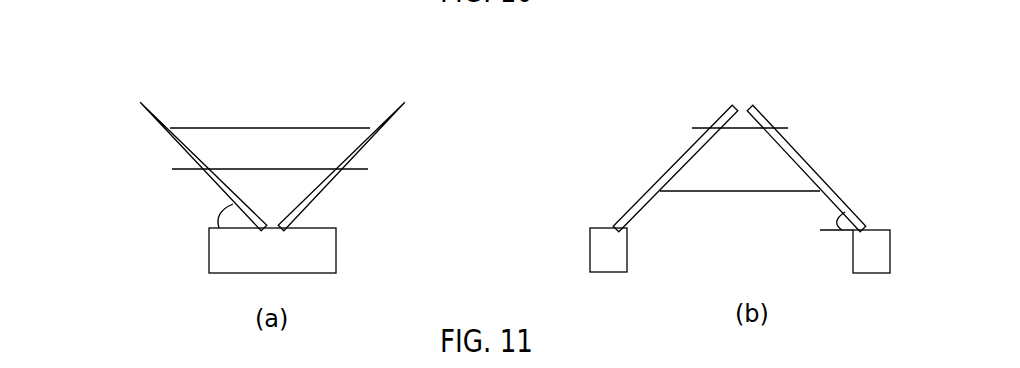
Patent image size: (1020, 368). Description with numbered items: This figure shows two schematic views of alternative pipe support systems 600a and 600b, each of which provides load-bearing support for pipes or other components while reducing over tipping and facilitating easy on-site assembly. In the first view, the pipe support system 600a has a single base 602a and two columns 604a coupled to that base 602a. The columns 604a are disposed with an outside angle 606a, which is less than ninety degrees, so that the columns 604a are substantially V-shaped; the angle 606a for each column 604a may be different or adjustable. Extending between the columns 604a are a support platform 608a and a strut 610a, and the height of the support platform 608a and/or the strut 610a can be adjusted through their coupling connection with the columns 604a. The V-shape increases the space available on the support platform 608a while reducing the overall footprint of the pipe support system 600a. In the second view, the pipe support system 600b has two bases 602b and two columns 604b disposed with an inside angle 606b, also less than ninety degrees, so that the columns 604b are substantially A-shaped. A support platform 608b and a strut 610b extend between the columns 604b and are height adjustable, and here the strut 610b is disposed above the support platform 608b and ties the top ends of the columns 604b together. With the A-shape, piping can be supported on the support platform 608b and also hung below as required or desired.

The pipe support system 600a is at (166, 58).
The base 602a is at (209, 250).
The columns 604a is at (140, 105).
The outside angle 606a is at (218, 208).
The support platform 608a is at (297, 128).
The strut 610a is at (360, 169).
The pipe support system 600b is at (840, 61).
The bases 602b is at (590, 238).
The columns 604b is at (673, 165).
The inside angle 606b is at (833, 220).
The support platform 608b is at (718, 192).
The strut 610b is at (790, 128).